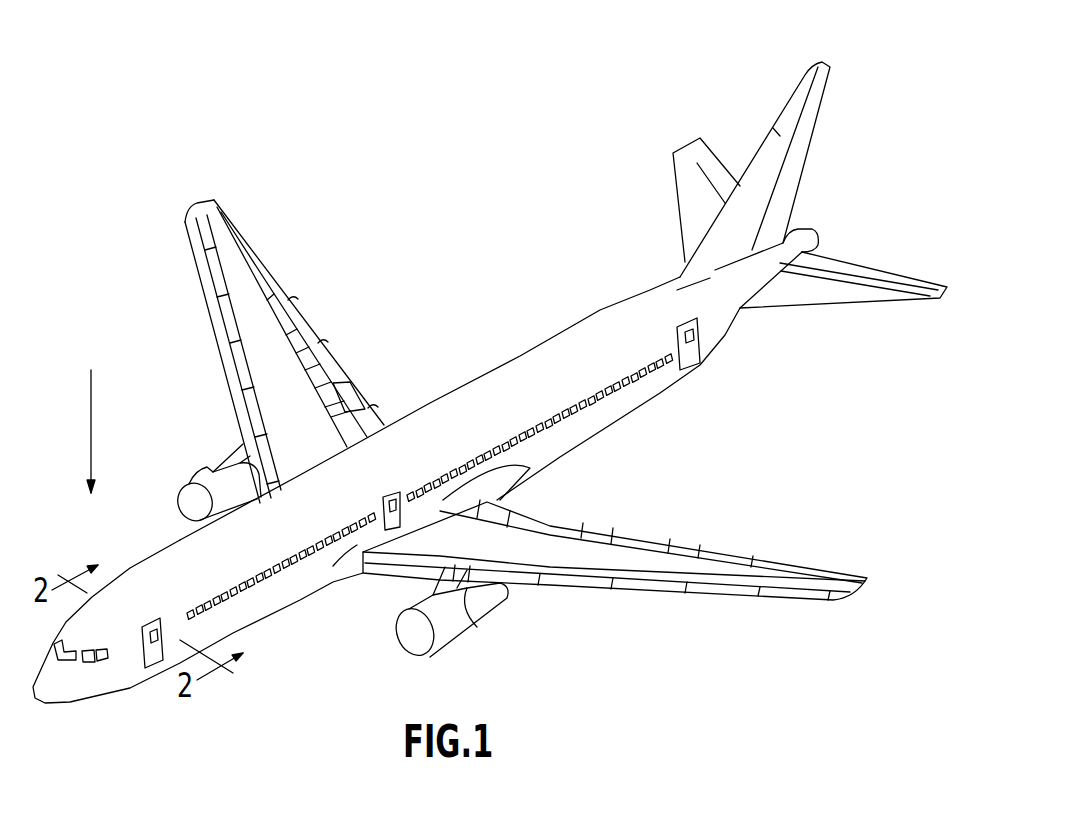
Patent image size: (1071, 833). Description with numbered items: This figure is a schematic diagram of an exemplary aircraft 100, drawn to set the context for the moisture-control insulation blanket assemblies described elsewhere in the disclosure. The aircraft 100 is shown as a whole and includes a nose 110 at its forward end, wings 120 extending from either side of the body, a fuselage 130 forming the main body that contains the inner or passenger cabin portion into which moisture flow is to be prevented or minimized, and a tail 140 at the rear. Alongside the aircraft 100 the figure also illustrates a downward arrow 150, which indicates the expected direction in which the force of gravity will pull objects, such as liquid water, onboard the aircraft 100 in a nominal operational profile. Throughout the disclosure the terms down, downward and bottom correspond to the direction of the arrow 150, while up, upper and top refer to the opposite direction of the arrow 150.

The aircraft 100 is at (421, 305).
The nose 110 is at (55, 703).
The wings 120 is at (217, 195).
The fuselage 130 is at (580, 437).
The tail 140 is at (835, 74).
The downward arrow 150 is at (91, 420).